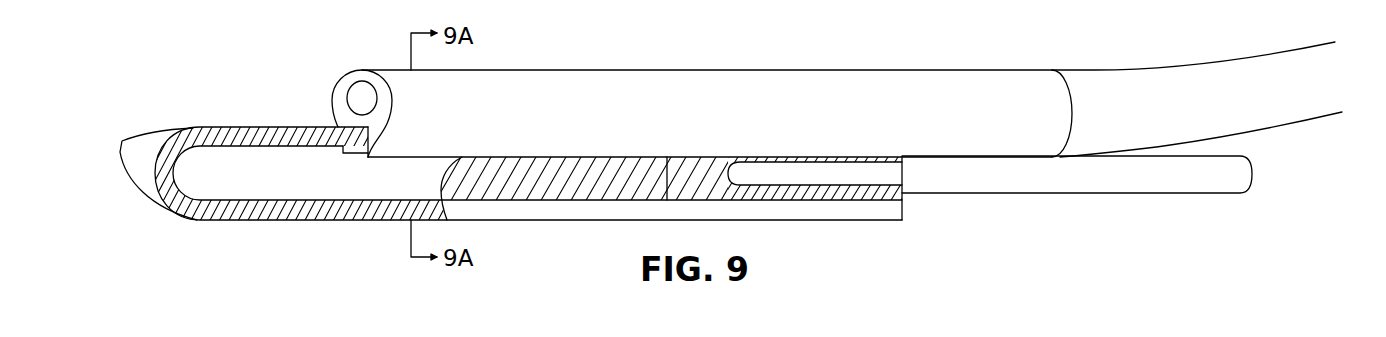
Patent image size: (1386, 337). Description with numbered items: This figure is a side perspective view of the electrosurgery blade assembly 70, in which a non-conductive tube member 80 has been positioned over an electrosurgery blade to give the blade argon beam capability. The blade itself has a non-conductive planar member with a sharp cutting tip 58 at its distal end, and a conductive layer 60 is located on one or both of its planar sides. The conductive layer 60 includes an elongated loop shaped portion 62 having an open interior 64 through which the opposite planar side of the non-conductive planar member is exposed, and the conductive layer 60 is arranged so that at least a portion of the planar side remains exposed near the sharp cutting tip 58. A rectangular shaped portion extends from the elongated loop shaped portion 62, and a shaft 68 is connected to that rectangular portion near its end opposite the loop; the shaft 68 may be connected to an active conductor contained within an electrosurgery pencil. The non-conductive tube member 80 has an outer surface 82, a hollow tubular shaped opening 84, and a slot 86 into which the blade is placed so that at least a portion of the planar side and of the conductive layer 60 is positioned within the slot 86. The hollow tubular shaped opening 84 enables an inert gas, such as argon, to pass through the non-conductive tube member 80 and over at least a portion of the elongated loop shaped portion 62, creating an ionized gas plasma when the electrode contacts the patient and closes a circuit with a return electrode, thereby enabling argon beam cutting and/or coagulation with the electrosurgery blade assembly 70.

The sharp cutting tip 58 is at (120, 160).
The conductive layer 60 is at (531, 188).
The elongated loop shaped portion 62 is at (270, 221).
The open interior 64 is at (203, 170).
The shaft 68 is at (942, 173).
The electrosurgery blade assembly 70 is at (728, 53).
The non-conductive tube member 80 is at (1000, 82).
The outer surface 82 is at (970, 128).
The hollow tubular shaped opening 84 is at (362, 93).
The slot 86 is at (360, 153).